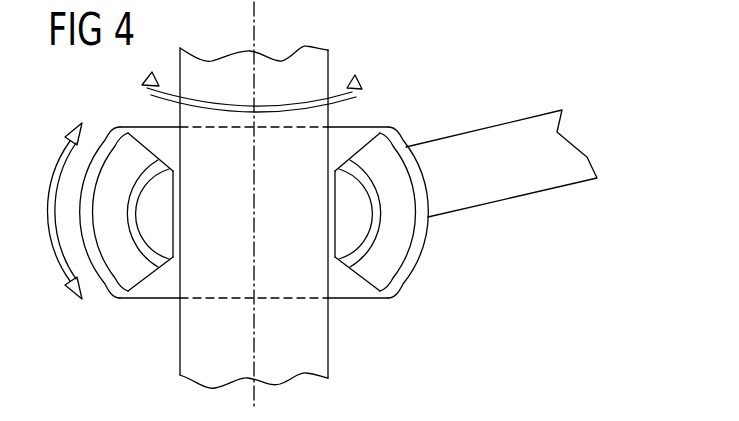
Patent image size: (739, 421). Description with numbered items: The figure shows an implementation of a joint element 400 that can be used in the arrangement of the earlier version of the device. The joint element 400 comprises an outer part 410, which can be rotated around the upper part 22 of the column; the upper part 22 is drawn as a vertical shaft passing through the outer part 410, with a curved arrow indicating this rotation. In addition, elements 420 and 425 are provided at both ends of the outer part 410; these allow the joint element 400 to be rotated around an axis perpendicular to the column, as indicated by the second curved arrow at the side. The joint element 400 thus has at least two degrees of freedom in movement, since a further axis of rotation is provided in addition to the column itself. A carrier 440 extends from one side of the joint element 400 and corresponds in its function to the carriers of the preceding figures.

The upper part of the column 22 is at (330, 347).
The joint element 400 is at (337, 218).
The outer part 410 is at (145, 300).
The element 420 is at (121, 150).
The element 425 is at (343, 213).
The carrier 440 is at (497, 122).